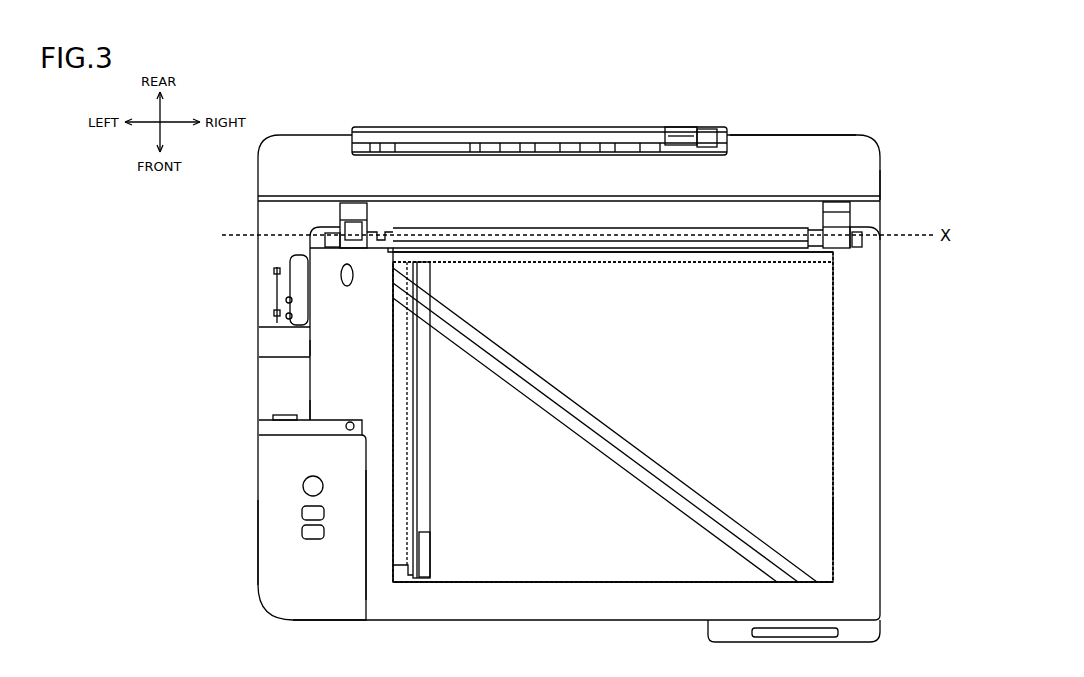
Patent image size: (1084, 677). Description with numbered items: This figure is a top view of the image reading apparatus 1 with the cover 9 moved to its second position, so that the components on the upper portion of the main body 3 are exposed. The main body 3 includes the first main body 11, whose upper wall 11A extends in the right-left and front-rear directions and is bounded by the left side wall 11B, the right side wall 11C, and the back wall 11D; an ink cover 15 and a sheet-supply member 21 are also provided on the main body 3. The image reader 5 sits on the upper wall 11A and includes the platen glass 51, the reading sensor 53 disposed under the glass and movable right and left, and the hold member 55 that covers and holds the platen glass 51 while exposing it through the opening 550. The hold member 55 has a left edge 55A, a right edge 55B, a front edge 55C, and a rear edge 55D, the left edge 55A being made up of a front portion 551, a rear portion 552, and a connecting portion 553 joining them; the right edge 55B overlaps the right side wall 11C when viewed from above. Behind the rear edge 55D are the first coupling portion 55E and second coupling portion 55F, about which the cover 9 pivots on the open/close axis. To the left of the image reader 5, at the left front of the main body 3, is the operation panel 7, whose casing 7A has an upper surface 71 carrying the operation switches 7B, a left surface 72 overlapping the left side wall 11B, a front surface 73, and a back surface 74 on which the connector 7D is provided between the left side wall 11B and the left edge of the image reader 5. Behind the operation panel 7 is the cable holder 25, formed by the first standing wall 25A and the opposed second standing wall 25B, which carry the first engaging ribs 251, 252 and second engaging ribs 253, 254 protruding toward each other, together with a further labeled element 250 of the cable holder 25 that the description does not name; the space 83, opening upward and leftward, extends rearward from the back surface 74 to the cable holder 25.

The image reading apparatus 1 is at (905, 100).
The main body 3 is at (252, 345).
The image reader 5 is at (770, 350).
The operation panel 7 is at (268, 610).
The casing 7A is at (275, 550).
The operation switches 7B is at (302, 512).
The connector 7D is at (286, 425).
The cover 9 is at (732, 200).
The first main body 11 is at (286, 154).
The upper wall 11A is at (341, 161).
The left side wall 11B is at (258, 196).
The right side wall 11C is at (882, 190).
The back wall 11D is at (770, 134).
The ink cover 15 is at (870, 630).
The sheet-supply member 21 is at (558, 134).
The cable holder 25 is at (282, 262).
The first standing wall 25A is at (268, 296).
The second standing wall 25B is at (305, 290).
The hinge pin 250 is at (300, 305).
The first engaging rib 251 is at (282, 318).
The first engaging rib 252 is at (278, 271).
The second engaging rib 253 is at (298, 318).
The second engaging rib 254 is at (300, 270).
The platen glass 51 is at (795, 457).
The reading sensor 53 is at (420, 437).
The hold member 55 is at (415, 607).
The left edge 55A is at (418, 508).
The right edge 55B is at (882, 398).
The front edge 55C is at (606, 628).
The rear edge 55D is at (620, 238).
The first coupling portion 55E is at (338, 212).
The second coupling portion 55F is at (855, 246).
The opening 550 is at (838, 532).
The front portion 551 is at (431, 548).
The rear portion 552 is at (310, 350).
The connecting portion 553 is at (344, 420).
The upper surface 71 is at (334, 576).
The left surface 72 is at (258, 563).
The front surface 73 is at (320, 625).
The back surface 74 is at (262, 413).
The space 83 is at (278, 395).